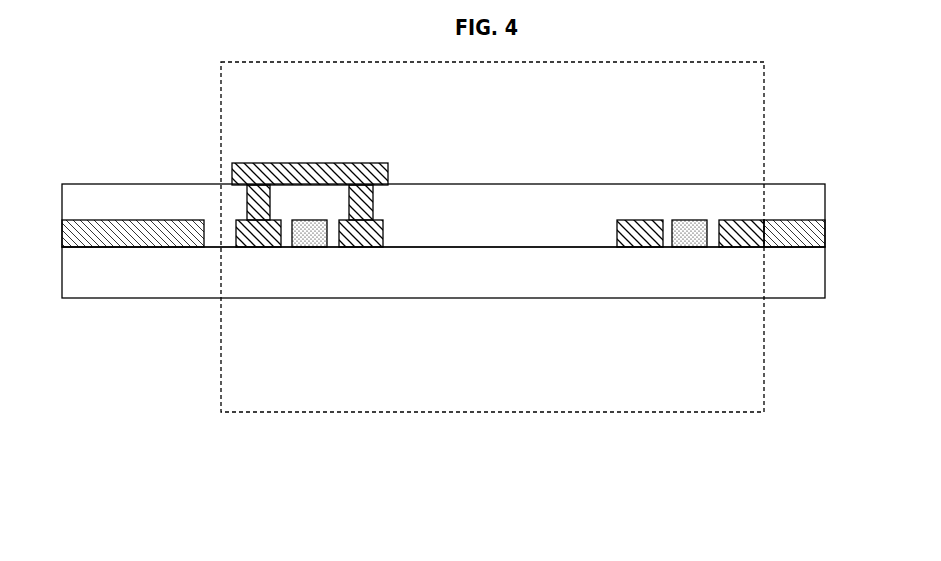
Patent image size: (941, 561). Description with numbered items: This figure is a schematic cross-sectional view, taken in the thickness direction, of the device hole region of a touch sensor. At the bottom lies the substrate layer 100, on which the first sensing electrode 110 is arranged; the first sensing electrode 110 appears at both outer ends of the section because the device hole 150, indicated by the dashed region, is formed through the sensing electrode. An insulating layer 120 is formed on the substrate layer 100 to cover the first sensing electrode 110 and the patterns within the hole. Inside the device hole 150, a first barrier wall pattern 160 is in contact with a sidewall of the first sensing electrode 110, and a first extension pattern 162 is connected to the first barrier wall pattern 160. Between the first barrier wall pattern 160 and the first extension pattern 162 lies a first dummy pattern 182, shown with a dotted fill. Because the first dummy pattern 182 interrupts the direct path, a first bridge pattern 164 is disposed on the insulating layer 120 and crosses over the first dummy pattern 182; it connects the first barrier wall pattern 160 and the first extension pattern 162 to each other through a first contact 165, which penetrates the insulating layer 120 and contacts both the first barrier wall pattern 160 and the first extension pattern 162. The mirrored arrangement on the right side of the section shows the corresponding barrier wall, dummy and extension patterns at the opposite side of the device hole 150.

The substrate layer 100 is at (818, 270).
The first sensing electrode 110 is at (140, 238).
The insulating layer 120 is at (818, 203).
The device hole 150 is at (482, 428).
The first barrier wall pattern 160 is at (258, 235).
The first extension pattern 162 is at (352, 235).
The first bridge pattern 164 is at (313, 163).
The first contact 165 is at (372, 208).
The first dummy pattern 182 is at (303, 235).